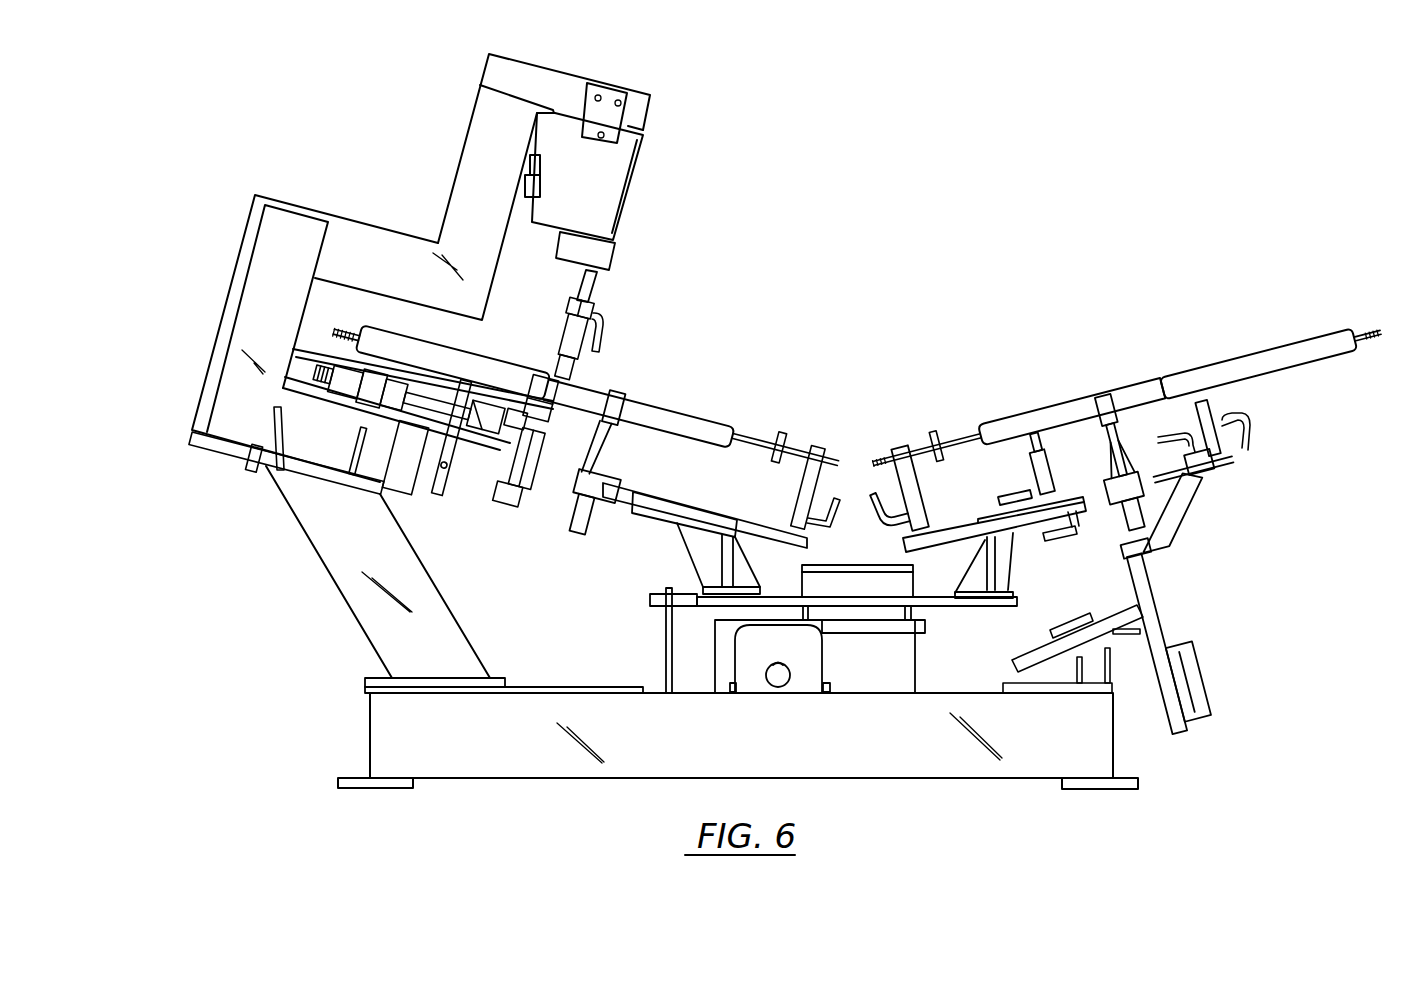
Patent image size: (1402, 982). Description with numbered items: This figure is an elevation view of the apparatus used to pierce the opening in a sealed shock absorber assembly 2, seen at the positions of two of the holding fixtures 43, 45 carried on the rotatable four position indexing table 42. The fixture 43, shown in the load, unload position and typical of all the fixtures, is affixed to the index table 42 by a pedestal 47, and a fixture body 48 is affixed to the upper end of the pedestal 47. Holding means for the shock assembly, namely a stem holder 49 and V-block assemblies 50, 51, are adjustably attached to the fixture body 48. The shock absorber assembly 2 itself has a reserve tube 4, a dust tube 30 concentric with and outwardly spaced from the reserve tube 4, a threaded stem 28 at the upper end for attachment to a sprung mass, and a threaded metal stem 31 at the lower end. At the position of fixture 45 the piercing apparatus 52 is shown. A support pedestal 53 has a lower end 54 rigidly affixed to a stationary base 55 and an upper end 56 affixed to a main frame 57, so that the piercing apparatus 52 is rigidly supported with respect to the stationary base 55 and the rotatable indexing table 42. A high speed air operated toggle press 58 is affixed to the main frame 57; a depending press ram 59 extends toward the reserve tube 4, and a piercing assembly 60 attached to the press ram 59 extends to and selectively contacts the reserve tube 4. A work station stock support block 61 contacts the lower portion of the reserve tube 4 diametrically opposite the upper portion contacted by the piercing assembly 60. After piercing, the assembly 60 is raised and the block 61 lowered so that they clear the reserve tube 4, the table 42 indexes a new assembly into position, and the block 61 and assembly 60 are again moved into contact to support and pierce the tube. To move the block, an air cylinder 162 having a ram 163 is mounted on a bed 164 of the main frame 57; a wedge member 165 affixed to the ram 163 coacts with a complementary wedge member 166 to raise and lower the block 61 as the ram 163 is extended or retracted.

The shock absorber assembly 2 is at (721, 410).
The reserve tube 4 is at (643, 402).
The threaded stem 28 is at (348, 327).
The dust tube 30 is at (411, 333).
The threaded metal stem 31 is at (790, 440).
The indexing table 42 is at (970, 606).
The shock absorber assembly holding fixture 43 is at (1080, 510).
The shock absorber assembly holding fixture 45 is at (670, 517).
The pedestal 47 is at (1012, 550).
The fixture body 48 is at (980, 523).
The stem holder 49 is at (895, 450).
The V-block assembly 50 is at (1042, 440).
The V-block assembly 51 is at (1103, 403).
The piercing apparatus 52 is at (668, 191).
The support pedestal 53 is at (358, 603).
The lower end 54 is at (498, 678).
The stationary base 55 is at (372, 708).
The upper end 56 is at (310, 472).
The main frame 57 is at (250, 277).
The air operated toggle press 58 is at (633, 158).
The press ram 59 is at (590, 290).
The piercing assembly 60 is at (567, 333).
The work station stock support block 61 is at (553, 415).
The air cylinder 162 is at (415, 410).
The ram 163 is at (481, 405).
The bed 164 is at (413, 483).
The wedge member 165 is at (540, 423).
The complementary wedge member 166 is at (550, 428).